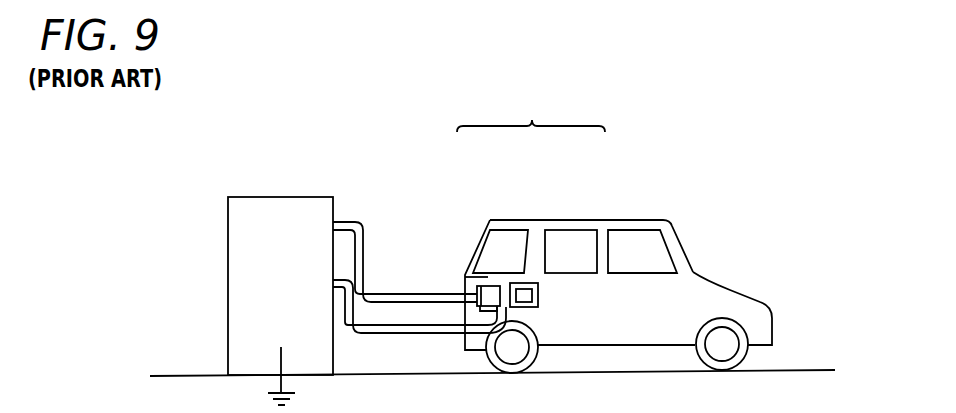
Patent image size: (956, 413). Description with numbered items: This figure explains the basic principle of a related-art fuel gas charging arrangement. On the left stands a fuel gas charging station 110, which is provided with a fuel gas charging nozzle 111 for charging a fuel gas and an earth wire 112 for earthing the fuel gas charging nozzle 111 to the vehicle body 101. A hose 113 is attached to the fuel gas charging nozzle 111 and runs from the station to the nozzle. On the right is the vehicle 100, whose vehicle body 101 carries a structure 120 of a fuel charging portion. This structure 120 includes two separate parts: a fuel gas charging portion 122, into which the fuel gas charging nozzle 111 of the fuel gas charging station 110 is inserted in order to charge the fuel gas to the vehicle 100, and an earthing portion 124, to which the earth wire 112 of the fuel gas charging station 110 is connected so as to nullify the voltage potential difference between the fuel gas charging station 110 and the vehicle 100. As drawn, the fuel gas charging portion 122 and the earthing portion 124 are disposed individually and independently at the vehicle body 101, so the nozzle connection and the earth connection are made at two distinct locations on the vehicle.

The vehicle 100 is at (693, 182).
The vehicle body 101 is at (718, 270).
The fuel gas charging station 110 is at (272, 160).
The fuel gas charging nozzle 111 is at (481, 288).
The earth wire 112 is at (527, 283).
The hose 113 is at (427, 294).
The structure of a fuel charging portion 120 is at (531, 111).
The fuel gas charging portion 122 is at (492, 272).
The earthing portion 124 is at (533, 270).